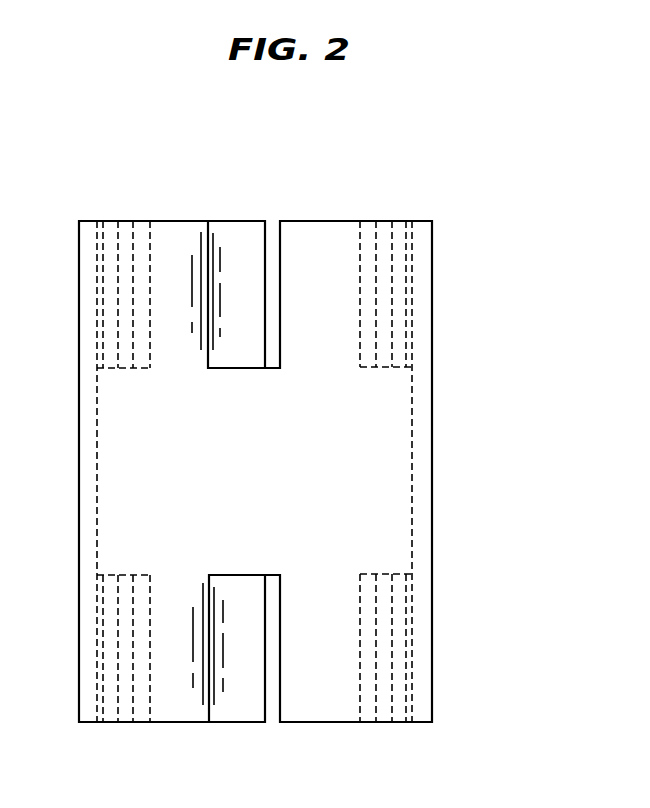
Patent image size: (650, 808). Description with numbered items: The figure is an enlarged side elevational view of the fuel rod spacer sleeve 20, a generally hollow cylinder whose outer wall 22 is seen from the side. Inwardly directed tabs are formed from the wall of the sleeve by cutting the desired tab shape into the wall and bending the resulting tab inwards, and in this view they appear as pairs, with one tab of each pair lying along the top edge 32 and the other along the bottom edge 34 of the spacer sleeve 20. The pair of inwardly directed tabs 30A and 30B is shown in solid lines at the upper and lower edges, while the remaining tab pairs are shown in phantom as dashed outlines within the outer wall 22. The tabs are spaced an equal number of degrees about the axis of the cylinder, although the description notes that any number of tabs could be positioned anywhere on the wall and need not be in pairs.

The spacer sleeve 20 is at (466, 293).
The outer wall 22 is at (123, 460).
The inwardly directed tab 30A is at (238, 243).
The inwardly directed tab 30B is at (243, 685).
The top edge 32 is at (323, 218).
The bottom edge 34 is at (322, 722).